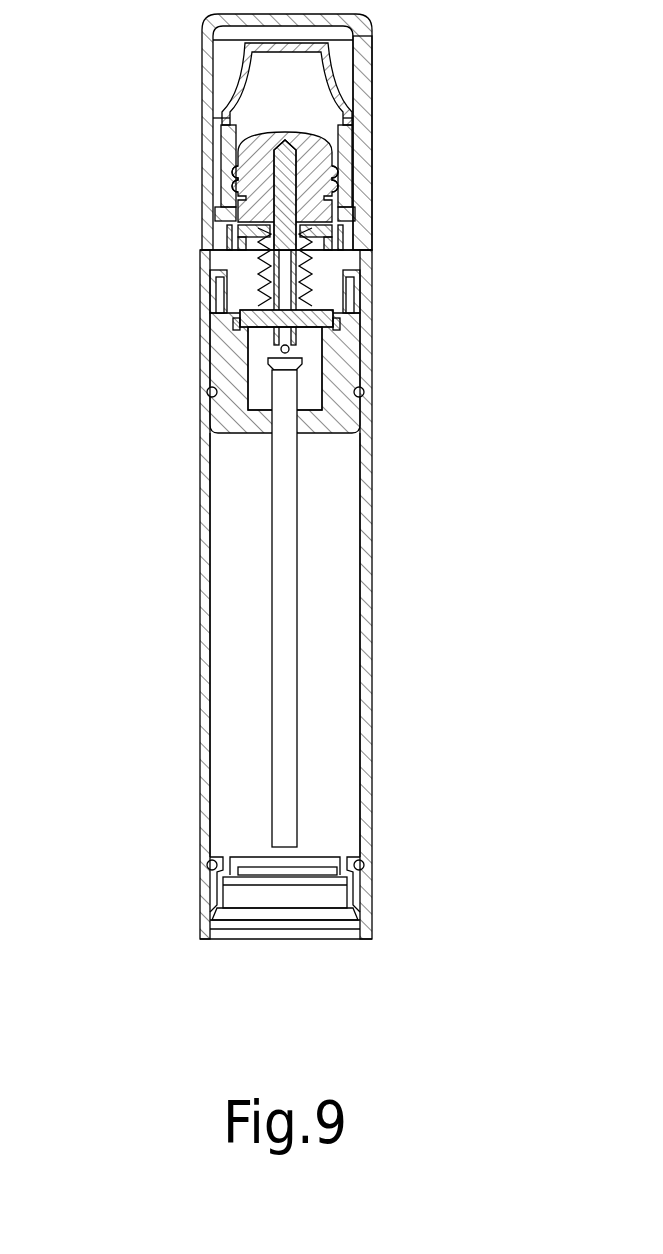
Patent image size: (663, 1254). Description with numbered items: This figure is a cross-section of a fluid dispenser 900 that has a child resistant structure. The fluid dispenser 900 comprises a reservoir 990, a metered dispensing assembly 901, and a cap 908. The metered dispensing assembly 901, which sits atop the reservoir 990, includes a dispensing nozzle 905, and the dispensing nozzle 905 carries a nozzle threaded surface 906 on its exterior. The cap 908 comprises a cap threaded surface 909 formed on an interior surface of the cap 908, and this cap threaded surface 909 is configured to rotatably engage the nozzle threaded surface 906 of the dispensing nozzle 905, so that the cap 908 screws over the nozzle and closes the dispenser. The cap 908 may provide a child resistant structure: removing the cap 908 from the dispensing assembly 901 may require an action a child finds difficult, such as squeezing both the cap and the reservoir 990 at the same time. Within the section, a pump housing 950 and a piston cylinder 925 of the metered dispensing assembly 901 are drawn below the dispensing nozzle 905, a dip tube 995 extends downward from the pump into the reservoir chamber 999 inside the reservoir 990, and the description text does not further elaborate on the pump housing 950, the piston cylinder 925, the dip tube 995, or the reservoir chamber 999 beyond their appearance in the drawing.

The fluid dispenser 900 is at (155, 83).
The metered dispensing assembly 901 is at (145, 160).
The dispensing nozzle 905 is at (255, 207).
The nozzle threaded surface 906 is at (248, 160).
The cap 908 is at (365, 202).
The cap threaded surface 909 is at (335, 163).
The piston cylinder 925 is at (260, 383).
The pump housing 950 is at (345, 359).
The reservoir 990 is at (177, 682).
The dip tube 995 is at (288, 742).
The reservoir chamber 999 is at (332, 543).